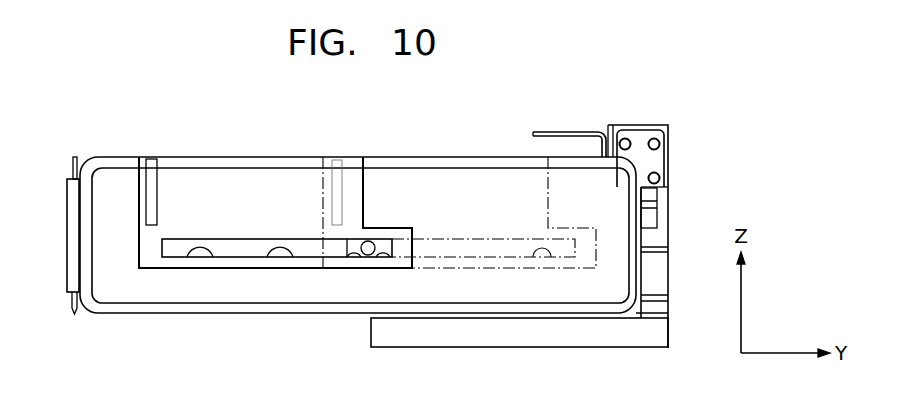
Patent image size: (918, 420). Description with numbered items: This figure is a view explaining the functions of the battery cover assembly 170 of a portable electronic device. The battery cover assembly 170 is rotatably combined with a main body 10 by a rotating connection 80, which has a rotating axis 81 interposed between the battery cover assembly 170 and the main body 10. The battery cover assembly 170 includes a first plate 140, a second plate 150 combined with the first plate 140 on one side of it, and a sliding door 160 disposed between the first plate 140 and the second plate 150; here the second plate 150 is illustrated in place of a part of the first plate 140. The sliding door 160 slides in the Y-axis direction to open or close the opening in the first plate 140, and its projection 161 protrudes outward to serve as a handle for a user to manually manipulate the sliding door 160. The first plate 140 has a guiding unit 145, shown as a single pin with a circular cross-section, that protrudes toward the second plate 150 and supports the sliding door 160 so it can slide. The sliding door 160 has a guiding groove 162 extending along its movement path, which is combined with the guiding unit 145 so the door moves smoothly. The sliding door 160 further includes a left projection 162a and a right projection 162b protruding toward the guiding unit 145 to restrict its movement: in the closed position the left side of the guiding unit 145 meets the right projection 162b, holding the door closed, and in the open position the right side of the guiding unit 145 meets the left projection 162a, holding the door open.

The main body 10 is at (442, 338).
The rotating connection 80 is at (73, 261).
The rotating axis 81 is at (75, 312).
The first plate 140 is at (456, 178).
The guiding unit 145 is at (370, 242).
The second plate 150 is at (579, 195).
The sliding door 160 is at (237, 170).
The projection 161 is at (152, 170).
The guiding groove 162 is at (270, 254).
The left projection 162a is at (190, 250).
The right projection 162b is at (378, 258).
The battery cover assembly 170 is at (138, 317).